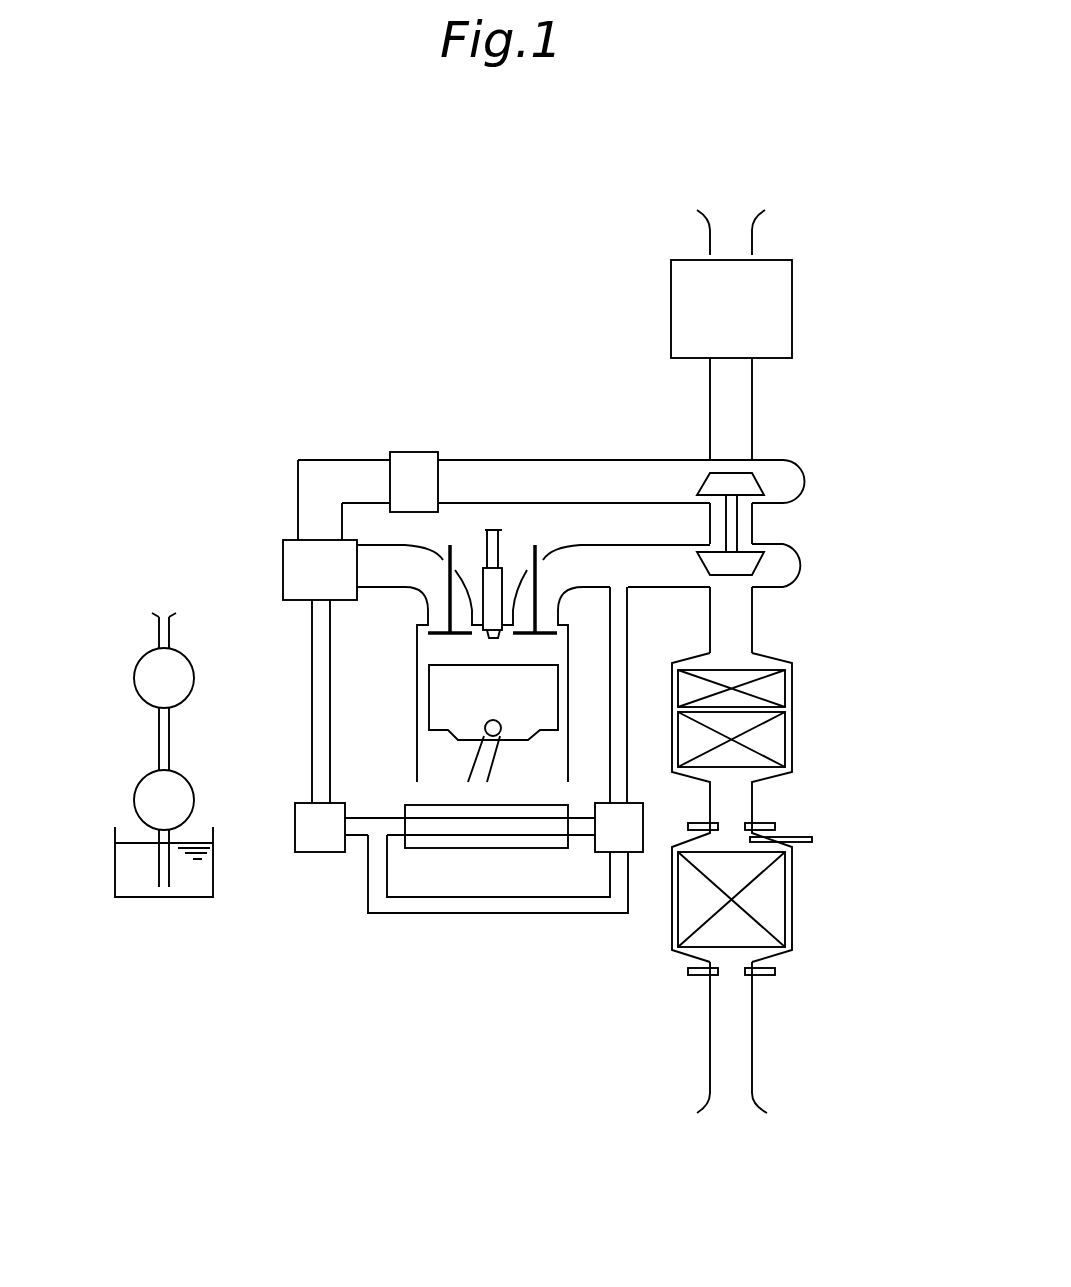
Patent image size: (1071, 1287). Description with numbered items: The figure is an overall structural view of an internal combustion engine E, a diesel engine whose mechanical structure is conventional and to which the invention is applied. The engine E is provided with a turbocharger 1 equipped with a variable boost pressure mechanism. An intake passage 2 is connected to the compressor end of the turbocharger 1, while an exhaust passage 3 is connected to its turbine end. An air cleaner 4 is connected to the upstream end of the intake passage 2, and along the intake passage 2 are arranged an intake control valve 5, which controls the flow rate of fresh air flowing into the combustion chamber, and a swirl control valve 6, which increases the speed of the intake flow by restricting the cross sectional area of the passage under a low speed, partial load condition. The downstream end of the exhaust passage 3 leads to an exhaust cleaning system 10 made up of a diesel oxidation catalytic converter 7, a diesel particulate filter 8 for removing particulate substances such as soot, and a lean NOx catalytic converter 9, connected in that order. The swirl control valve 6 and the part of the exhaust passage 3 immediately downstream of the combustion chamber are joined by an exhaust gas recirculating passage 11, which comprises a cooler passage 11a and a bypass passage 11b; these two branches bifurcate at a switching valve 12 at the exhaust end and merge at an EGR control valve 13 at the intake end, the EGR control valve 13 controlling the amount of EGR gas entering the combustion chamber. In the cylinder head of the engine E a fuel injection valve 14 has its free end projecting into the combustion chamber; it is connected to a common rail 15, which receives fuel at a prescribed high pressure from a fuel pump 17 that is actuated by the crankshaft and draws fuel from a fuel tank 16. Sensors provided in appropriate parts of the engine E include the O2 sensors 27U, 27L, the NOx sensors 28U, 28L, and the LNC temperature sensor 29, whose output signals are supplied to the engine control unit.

The turbocharger 1 is at (772, 525).
The intake passage 2 is at (610, 460).
The exhaust passage 3 is at (657, 590).
The air cleaner 4 is at (785, 318).
The intake control valve 5 is at (418, 458).
The swirl control valve 6 is at (292, 572).
The diesel oxidation catalytic converter 7 is at (777, 690).
The diesel particulate filter 8 is at (778, 745).
The lean NOx catalytic converter 9 is at (773, 877).
The exhaust cleaning system 10 is at (867, 710).
The exhaust gas recirculating passage 11 is at (543, 998).
The cooler passage 11a is at (433, 850).
The bypass passage 11b is at (527, 915).
The switching valve 12 is at (633, 837).
The EGR control valve 13 is at (325, 843).
The fuel injection valve 14 is at (497, 580).
The common rail 15 is at (140, 678).
The fuel tank 16 is at (123, 873).
The fuel pump 17 is at (142, 793).
The O2 sensor 27U is at (787, 813).
The O2 sensor 27L is at (765, 977).
The NOx sensor 28U is at (690, 827).
The NOx sensor 28L is at (695, 977).
The LNC temperature sensor 29 is at (807, 838).
The internal combustion engine E is at (405, 706).